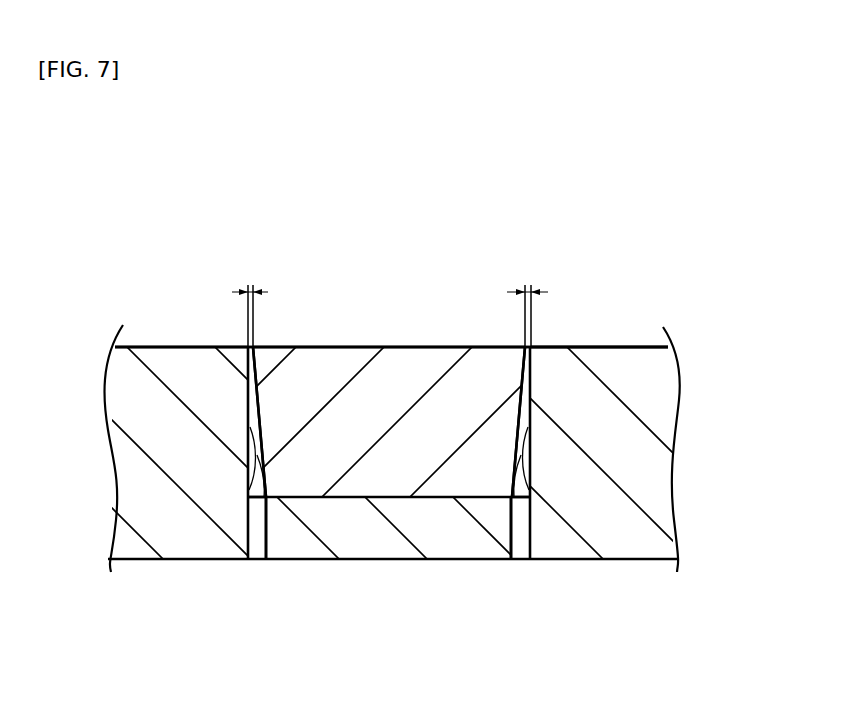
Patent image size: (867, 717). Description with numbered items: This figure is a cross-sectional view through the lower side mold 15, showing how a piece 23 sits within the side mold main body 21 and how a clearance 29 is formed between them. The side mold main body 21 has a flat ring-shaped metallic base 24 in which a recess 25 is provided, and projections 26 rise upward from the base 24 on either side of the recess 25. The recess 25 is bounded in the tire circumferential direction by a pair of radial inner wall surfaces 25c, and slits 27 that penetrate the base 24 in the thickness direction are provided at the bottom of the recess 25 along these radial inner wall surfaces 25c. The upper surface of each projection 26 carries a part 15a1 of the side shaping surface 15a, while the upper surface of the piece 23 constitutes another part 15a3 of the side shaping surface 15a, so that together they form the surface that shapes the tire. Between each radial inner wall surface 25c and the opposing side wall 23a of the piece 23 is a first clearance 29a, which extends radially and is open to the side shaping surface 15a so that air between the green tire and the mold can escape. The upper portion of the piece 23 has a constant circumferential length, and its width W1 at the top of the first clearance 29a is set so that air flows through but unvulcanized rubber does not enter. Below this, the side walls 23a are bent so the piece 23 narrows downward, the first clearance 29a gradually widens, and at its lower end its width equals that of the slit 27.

The lower side mold 15 is at (424, 117).
The side shaping surface 15a is at (390, 281).
The part of the side shaping surface 15a1 is at (183, 346).
The part of the side shaping surface 15a3 is at (360, 346).
The side mold main body 21 is at (588, 333).
The piece 23 is at (391, 382).
The side wall of the piece 23a is at (265, 482).
The base 24 is at (381, 530).
The recess 25 is at (424, 497).
The radial inner wall surface 25c is at (258, 442).
The projection 26 is at (145, 410).
The slit 27 is at (250, 524).
The clearance 29 is at (389, 309).
The first clearance 29a is at (255, 345).
The width of the first clearance W1 is at (252, 287).